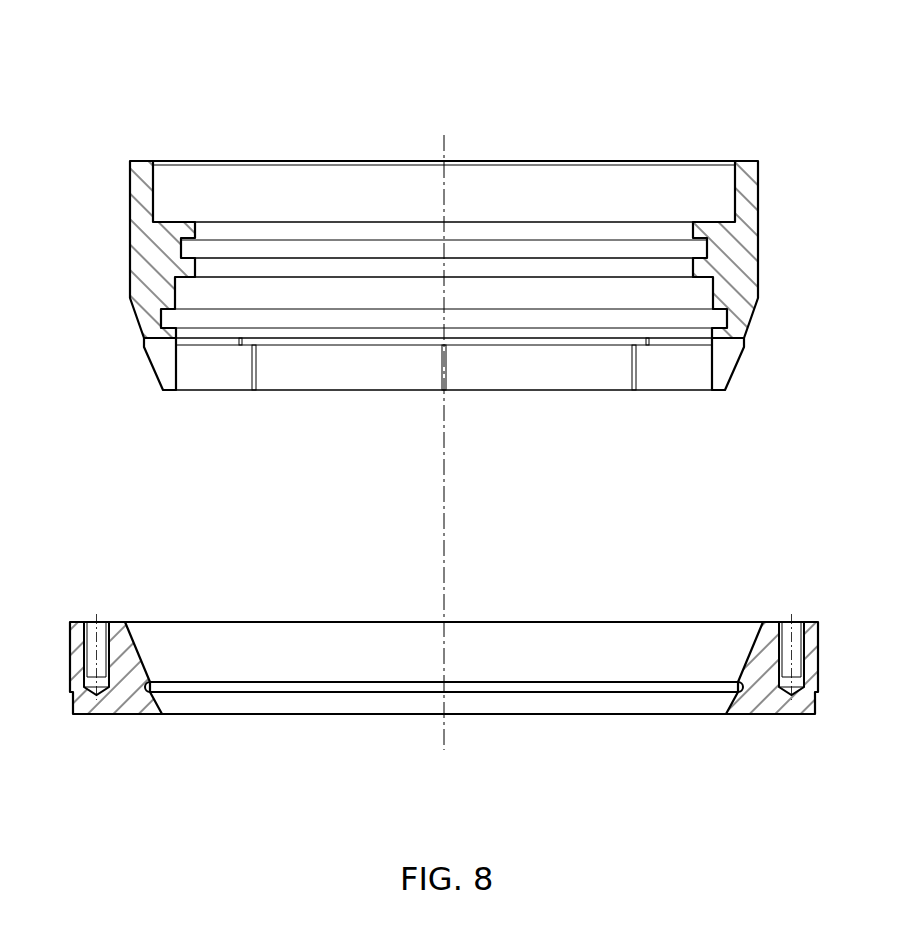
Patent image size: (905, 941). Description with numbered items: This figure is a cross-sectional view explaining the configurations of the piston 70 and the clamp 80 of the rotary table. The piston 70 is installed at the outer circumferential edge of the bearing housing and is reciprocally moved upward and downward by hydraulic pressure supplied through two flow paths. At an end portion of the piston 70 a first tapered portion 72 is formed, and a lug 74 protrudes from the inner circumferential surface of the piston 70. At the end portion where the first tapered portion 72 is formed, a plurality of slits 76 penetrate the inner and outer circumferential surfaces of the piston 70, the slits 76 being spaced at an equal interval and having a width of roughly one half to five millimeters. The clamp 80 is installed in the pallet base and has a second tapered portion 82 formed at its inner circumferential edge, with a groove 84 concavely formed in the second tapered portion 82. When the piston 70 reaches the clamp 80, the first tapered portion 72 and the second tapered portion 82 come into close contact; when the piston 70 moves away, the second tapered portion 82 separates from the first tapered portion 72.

The piston 70 is at (416, 232).
The first tapered portion 72 is at (153, 369).
The lug 74 is at (160, 243).
The slits 76 is at (256, 365).
The clamp 80 is at (444, 644).
The second tapered portion 82 is at (138, 648).
The groove 84 is at (272, 685).